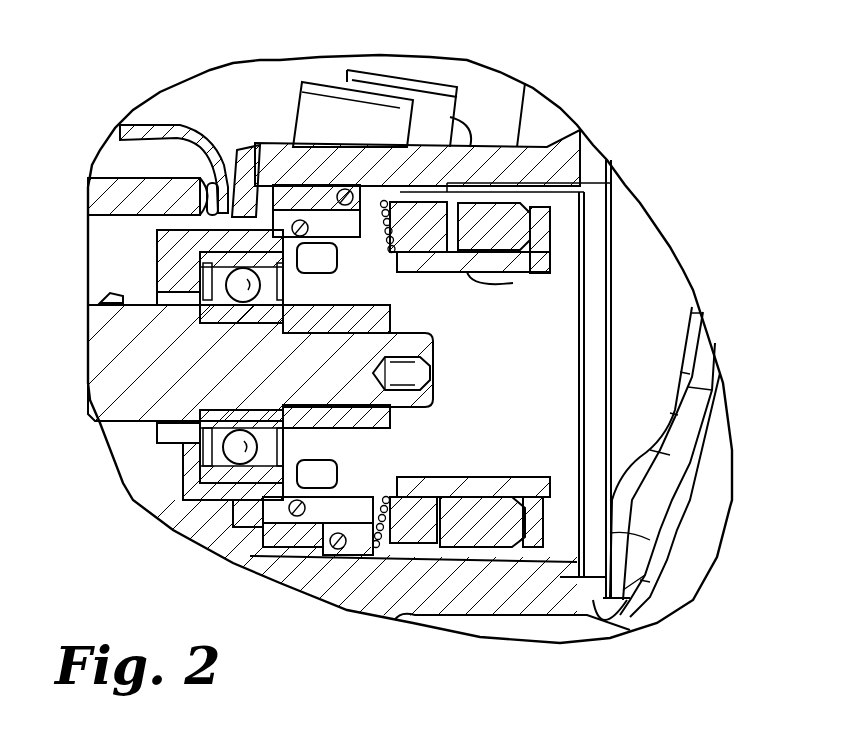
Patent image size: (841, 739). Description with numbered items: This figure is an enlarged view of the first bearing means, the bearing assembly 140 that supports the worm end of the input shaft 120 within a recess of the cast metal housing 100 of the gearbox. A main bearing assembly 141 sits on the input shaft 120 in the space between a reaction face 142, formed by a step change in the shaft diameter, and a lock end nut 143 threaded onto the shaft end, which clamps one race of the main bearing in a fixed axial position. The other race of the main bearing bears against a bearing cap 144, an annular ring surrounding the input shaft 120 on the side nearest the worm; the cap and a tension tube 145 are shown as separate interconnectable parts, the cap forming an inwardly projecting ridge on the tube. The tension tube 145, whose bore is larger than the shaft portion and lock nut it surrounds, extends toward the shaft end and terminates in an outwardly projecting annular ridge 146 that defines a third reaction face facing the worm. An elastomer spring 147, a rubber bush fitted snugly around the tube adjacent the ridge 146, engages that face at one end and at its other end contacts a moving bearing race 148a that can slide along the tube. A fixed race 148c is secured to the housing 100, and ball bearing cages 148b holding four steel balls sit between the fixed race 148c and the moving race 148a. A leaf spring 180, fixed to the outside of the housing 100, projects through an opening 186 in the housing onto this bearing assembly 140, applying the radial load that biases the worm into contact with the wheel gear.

The housing 100 is at (657, 623).
The input shaft 120 is at (127, 288).
The bearing assembly 140 is at (635, 193).
The main bearing assembly 141 is at (228, 445).
The reaction face 142 is at (200, 333).
The lock end nut 143 is at (333, 304).
The bearing cap 144 is at (153, 250).
The tension tube 145 is at (200, 503).
The annular ridge 146 is at (547, 222).
The elastomer spring 147 is at (493, 200).
The moving bearing race 148a is at (512, 612).
The ball bearing cages 148b is at (380, 540).
The fixed race 148c is at (360, 556).
The leaf spring 180 is at (160, 122).
The opening 186 is at (245, 145).